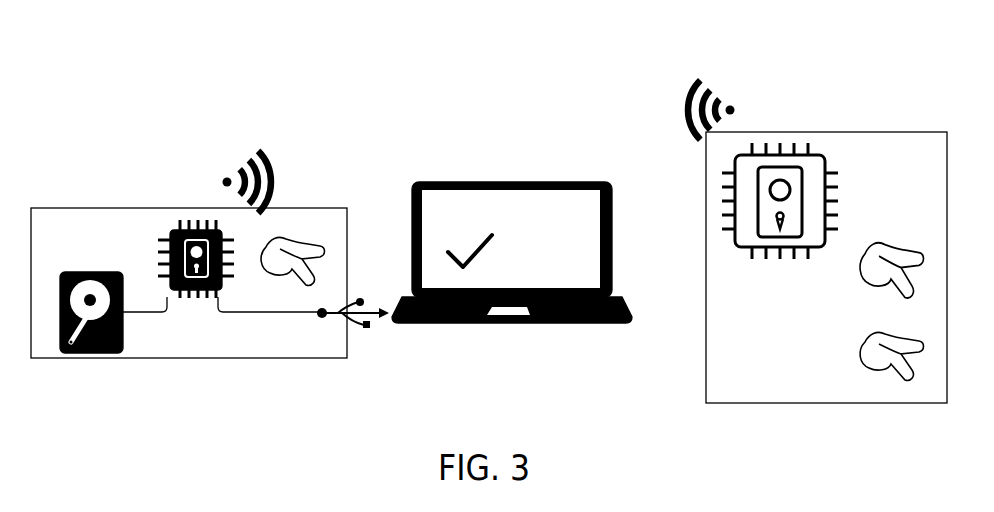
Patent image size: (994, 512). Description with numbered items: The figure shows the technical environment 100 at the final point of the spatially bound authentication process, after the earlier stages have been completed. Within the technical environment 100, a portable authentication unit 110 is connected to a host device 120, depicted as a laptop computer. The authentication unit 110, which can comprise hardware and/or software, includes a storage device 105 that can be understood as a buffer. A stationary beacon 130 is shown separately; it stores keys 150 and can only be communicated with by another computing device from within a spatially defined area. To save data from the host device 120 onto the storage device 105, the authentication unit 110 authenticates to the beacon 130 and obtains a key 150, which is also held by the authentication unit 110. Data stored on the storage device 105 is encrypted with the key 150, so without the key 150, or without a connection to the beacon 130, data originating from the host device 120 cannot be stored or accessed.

The technical environment 100 is at (873, 48).
The storage device 105 is at (91, 304).
The authentication unit 110 is at (210, 254).
The host device 120 is at (522, 226).
The beacon 130 is at (920, 163).
The key 150 is at (291, 242).